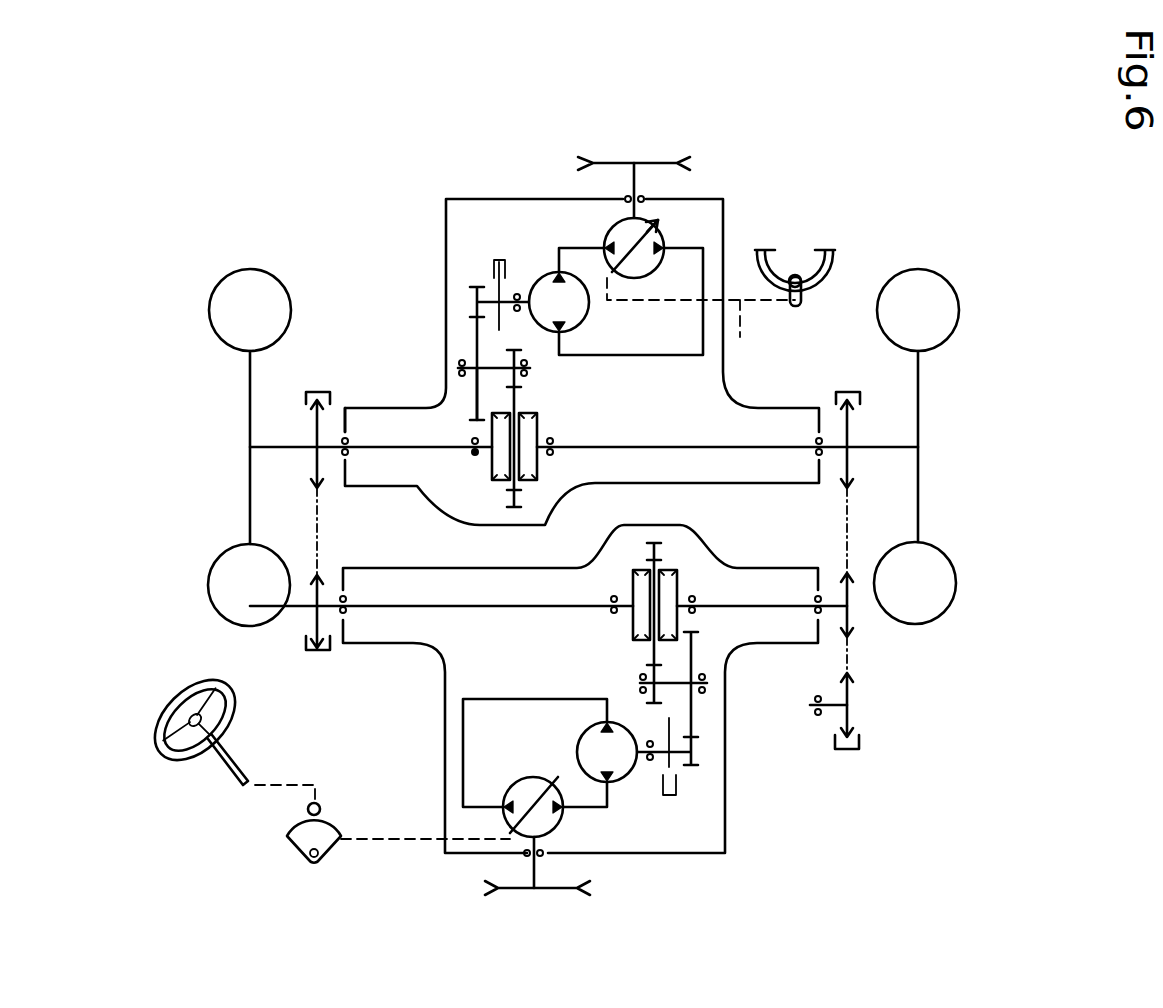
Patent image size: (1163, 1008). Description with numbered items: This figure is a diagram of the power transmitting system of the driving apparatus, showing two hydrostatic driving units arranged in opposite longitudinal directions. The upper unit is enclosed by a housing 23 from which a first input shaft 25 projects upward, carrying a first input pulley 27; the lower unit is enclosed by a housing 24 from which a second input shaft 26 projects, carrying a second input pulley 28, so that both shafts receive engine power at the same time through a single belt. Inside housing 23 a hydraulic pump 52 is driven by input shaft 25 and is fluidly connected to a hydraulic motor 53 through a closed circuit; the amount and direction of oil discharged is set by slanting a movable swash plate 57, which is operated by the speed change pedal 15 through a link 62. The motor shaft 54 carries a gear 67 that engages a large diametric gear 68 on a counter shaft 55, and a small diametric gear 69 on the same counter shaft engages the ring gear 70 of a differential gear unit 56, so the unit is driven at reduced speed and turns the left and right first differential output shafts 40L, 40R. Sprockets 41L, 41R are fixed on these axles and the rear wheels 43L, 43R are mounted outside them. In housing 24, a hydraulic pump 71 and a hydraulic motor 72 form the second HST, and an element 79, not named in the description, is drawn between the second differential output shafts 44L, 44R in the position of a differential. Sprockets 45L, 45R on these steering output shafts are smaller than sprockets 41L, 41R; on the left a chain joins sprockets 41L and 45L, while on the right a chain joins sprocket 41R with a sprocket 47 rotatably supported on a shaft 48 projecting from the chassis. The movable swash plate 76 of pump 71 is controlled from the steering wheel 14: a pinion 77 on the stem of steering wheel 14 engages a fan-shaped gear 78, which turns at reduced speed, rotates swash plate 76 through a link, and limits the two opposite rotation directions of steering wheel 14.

The steering wheel 14 is at (180, 690).
The speed change pedal 15 is at (824, 250).
The housing 23 is at (446, 199).
The housing 24 is at (723, 830).
The first input shaft 25 is at (636, 190).
The second input shaft 26 is at (536, 871).
The first input pulley 27 is at (684, 160).
The second input pulley 28 is at (492, 900).
The first differential output shaft 40L is at (277, 447).
The first differential output shaft 40R is at (918, 447).
The sprocket 41L is at (316, 420).
The sprocket 41R is at (848, 420).
The rear wheel 43L is at (243, 270).
The rear wheel 43R is at (946, 284).
The second differential output shaft 44L is at (540, 606).
The second differential output shaft 44R is at (742, 606).
The sprocket 45L is at (317, 620).
The sprocket 45R is at (848, 618).
The sprocket 47 is at (852, 732).
The shaft 48 is at (818, 712).
The hydraulic pump 52 is at (606, 234).
The hydraulic motor 53 is at (536, 285).
The motor shaft 54 is at (477, 287).
The counter shaft 55 is at (462, 364).
The differential gear unit 56 is at (449, 475).
The movable swash plate 57 is at (662, 216).
The link 62 is at (701, 319).
The gear 67 is at (494, 272).
The large diametric gear 68 is at (477, 408).
The small diametric gear 69 is at (516, 352).
The ring gear 70 is at (510, 505).
The hydraulic pump 71 is at (518, 782).
The hydraulic motor 72 is at (630, 780).
The movable swash plate 76 is at (560, 770).
The pinion 77 is at (318, 804).
The fan-shaped gear 78 is at (287, 840).
The rear differential 79 is at (706, 578).